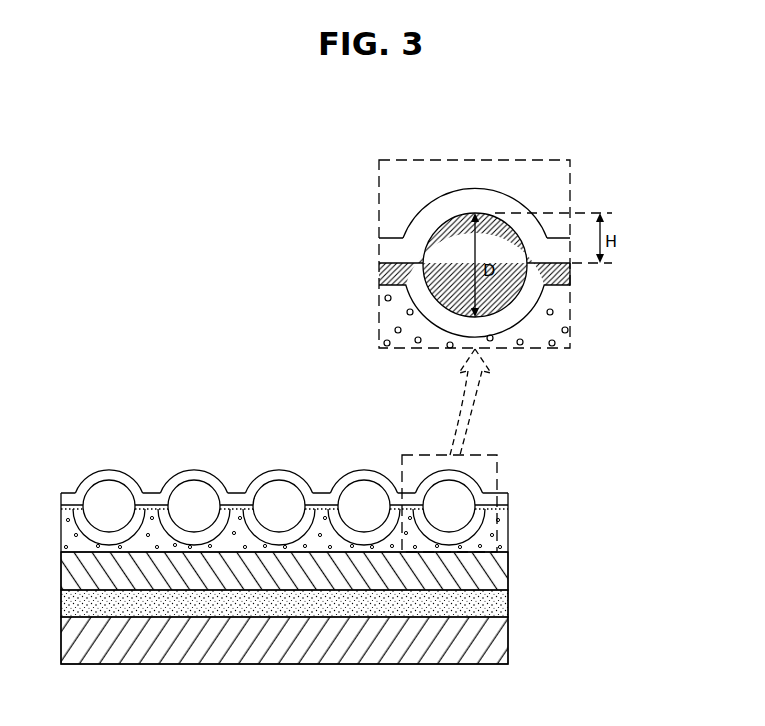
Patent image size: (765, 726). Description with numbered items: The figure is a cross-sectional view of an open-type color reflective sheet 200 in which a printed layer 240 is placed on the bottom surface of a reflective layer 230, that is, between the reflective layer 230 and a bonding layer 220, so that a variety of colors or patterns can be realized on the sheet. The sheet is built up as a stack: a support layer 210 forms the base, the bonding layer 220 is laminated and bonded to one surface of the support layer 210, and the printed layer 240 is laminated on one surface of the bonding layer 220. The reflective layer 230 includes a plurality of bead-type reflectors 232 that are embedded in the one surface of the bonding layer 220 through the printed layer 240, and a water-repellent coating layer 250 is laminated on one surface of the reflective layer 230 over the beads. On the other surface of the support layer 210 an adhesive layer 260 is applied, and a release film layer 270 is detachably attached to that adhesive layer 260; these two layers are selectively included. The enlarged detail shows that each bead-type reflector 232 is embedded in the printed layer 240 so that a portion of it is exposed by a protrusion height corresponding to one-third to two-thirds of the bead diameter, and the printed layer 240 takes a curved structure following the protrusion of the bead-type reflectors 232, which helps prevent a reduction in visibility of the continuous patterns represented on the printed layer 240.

The open-type color reflective sheet 200 is at (237, 325).
The support layer 210 is at (497, 573).
The bonding layer 220 is at (573, 322).
The reflective layer 230 is at (570, 280).
The bead-type reflectors 232 is at (496, 232).
The printed layer 240 is at (380, 270).
The water-repellent coating layer 250 is at (477, 200).
The adhesive layer 260 is at (497, 603).
The release film layer 270 is at (497, 643).